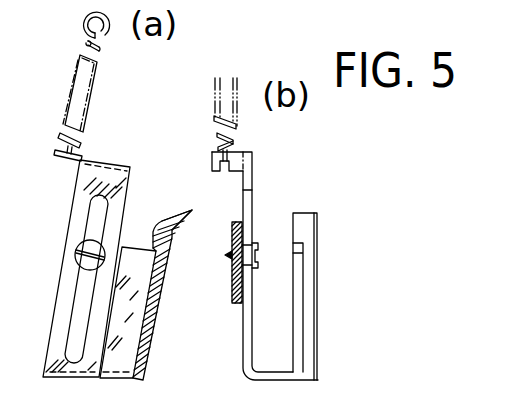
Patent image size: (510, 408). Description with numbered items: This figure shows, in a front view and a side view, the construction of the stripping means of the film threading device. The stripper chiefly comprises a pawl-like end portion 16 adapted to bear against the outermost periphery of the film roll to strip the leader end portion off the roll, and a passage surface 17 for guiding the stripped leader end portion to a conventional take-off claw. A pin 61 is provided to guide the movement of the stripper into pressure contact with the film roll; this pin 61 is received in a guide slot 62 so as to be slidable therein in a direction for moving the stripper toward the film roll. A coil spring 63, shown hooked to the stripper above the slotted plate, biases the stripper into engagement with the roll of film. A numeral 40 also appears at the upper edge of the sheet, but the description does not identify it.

The pawl-like end portion 16 is at (173, 213).
The passage surface 17 is at (152, 347).
The reference numeral 40 is at (363, 13).
The pin 61 is at (253, 244).
The guide slot 62 is at (95, 217).
The coil spring 63 is at (93, 81).